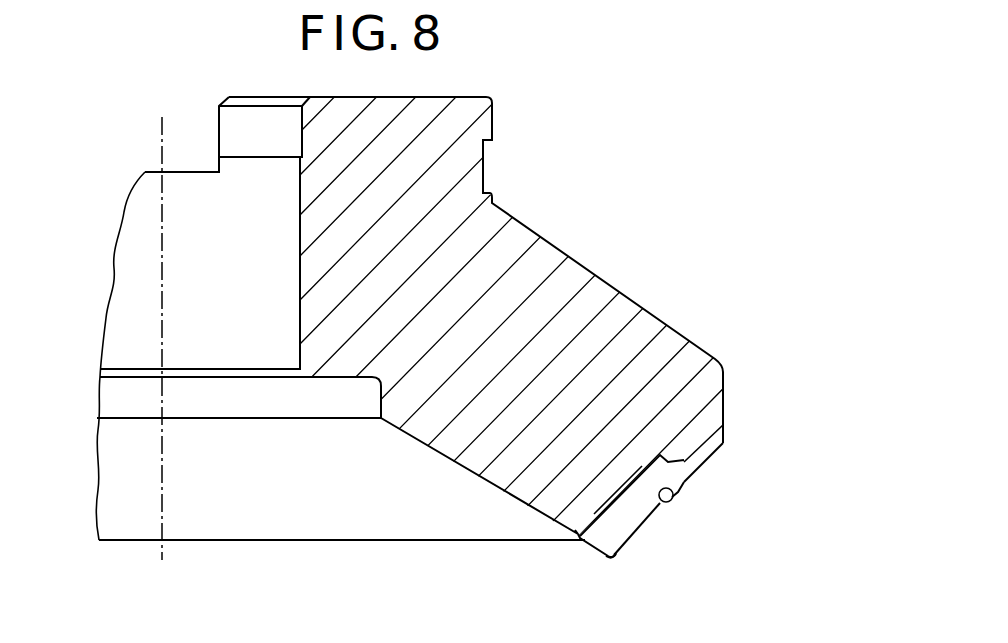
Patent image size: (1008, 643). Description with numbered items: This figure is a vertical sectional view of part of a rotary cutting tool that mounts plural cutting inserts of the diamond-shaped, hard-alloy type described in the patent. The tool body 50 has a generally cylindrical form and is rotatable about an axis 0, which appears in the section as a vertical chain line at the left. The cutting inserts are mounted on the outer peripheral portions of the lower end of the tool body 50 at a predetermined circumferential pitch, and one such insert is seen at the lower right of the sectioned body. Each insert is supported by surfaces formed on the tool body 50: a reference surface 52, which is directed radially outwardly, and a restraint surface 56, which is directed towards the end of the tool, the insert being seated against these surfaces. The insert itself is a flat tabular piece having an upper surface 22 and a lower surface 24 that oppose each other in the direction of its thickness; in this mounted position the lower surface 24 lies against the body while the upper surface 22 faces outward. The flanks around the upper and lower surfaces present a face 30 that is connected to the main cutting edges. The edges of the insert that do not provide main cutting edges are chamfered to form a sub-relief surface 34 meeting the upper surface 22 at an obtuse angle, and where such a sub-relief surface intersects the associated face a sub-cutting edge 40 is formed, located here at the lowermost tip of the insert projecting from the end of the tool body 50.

The axis 0 is at (161, 291).
The tool body 50 is at (547, 262).
The reference surface 52 is at (667, 452).
The restraint surface 56 is at (673, 502).
The face 30 is at (640, 525).
The upper surface 22 is at (640, 557).
The sub-cutting edge 40 is at (613, 556).
The lower surface 24 is at (613, 497).
The sub-relief surface 34 is at (593, 515).